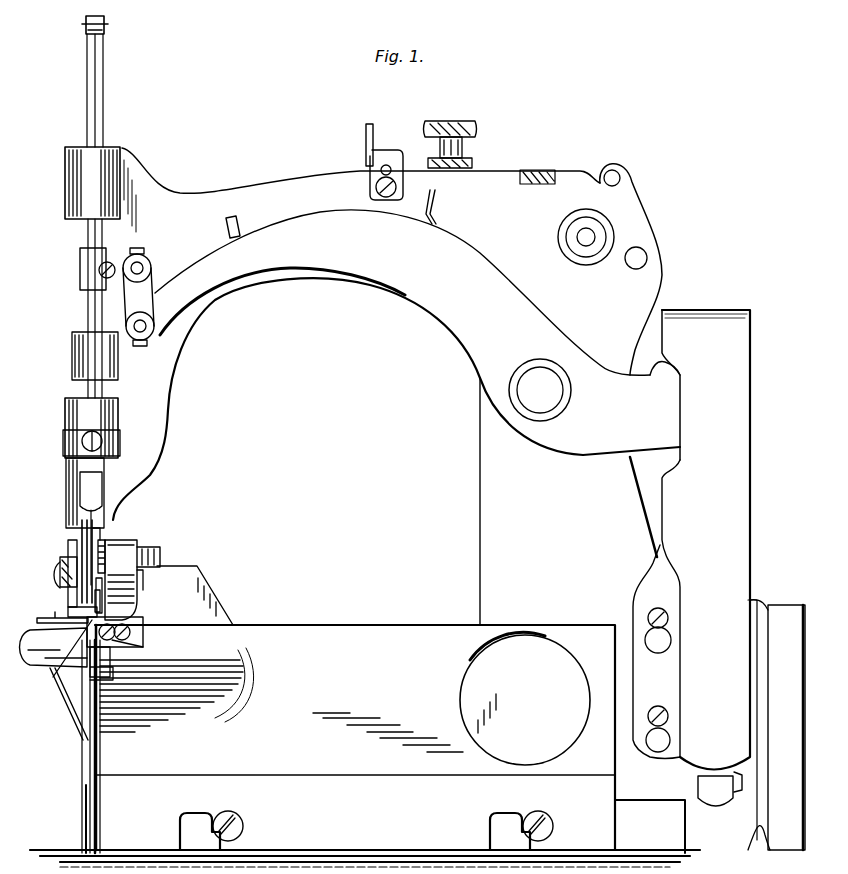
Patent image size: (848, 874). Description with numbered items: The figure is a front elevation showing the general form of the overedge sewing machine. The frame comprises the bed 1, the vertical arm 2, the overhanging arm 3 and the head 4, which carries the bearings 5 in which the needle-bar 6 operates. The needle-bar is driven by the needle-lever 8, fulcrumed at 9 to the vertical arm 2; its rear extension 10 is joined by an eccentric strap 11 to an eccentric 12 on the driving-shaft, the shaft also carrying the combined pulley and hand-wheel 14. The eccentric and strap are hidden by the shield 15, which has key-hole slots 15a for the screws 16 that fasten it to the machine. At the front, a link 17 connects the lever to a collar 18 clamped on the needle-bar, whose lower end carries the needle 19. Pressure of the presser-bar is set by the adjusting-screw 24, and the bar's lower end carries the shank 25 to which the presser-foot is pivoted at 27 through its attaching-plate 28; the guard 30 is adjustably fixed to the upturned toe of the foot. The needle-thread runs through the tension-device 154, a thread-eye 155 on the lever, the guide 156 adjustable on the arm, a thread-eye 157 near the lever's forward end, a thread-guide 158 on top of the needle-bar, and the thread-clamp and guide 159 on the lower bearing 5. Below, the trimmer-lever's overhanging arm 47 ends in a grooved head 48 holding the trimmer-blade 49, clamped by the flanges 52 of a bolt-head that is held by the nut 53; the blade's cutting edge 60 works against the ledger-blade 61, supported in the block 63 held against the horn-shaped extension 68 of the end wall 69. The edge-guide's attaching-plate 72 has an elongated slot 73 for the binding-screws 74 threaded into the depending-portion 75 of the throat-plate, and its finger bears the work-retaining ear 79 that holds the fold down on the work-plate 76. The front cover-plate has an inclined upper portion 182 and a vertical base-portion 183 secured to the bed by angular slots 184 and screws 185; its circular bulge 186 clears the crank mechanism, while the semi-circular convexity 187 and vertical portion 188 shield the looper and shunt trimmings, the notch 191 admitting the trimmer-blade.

The bed 1 is at (650, 826).
The vertical arm 2 is at (495, 520).
The overhanging arm 3 is at (294, 272).
The head 4 is at (170, 430).
The bearings 5 is at (80, 186).
The needle-bar 6 is at (90, 312).
The needle-lever 8 is at (435, 300).
The fulcrum 9 is at (522, 392).
The rear extension 10 is at (652, 388).
The eccentric strap 11 is at (712, 790).
The eccentric 12 is at (742, 782).
The combined pulley and hand-wheel 14 is at (786, 605).
The shield 15 is at (742, 520).
The key-hole slots 15a is at (660, 642).
The screws 16 is at (666, 715).
The link 17 is at (152, 290).
The collar 18 is at (82, 262).
The needle 19 is at (85, 522).
The adjusting-screw 24 is at (458, 125).
The shank 25 is at (80, 540).
The pivot 27 is at (58, 572).
The attaching-plate 28 is at (62, 562).
The guard 30 is at (103, 590).
The overhanging arm of trimmer-lever 47 is at (145, 582).
The grooved head 48 is at (132, 542).
The trimmer-blade 49 is at (104, 540).
The flanges 52 is at (105, 548).
The nut 53 is at (158, 552).
The cutting edge 60 is at (102, 602).
The ledger-blade 61 is at (82, 690).
The block 63 is at (60, 690).
The horn-shaped extension 68 is at (32, 660).
The end wall 69 is at (82, 777).
The attaching-plate 72 is at (130, 624).
The elongated slot 73 is at (128, 643).
The binding-screws 74 is at (131, 633).
The depending-portion 75 is at (55, 668).
The work-plate 76 is at (61, 604).
The work-retaining ear 79 is at (85, 628).
The tension-device 154 is at (608, 225).
The thread-eye 155 is at (445, 218).
The guide 156 is at (367, 130).
The thread-eye 157 is at (238, 220).
The thread-guide 158 is at (106, 28).
The thread-clamp and guide 159 is at (120, 440).
The inclined upper portion of cover-plate 182 is at (355, 737).
The vertical base-portion 183 is at (365, 821).
The angular slots 184 is at (190, 828).
The screws 185 is at (229, 818).
The circular bulge 186 is at (525, 698).
The semi-circular convexity 187 is at (177, 690).
The vertical portion 188 is at (208, 594).
The notch 191 is at (110, 662).